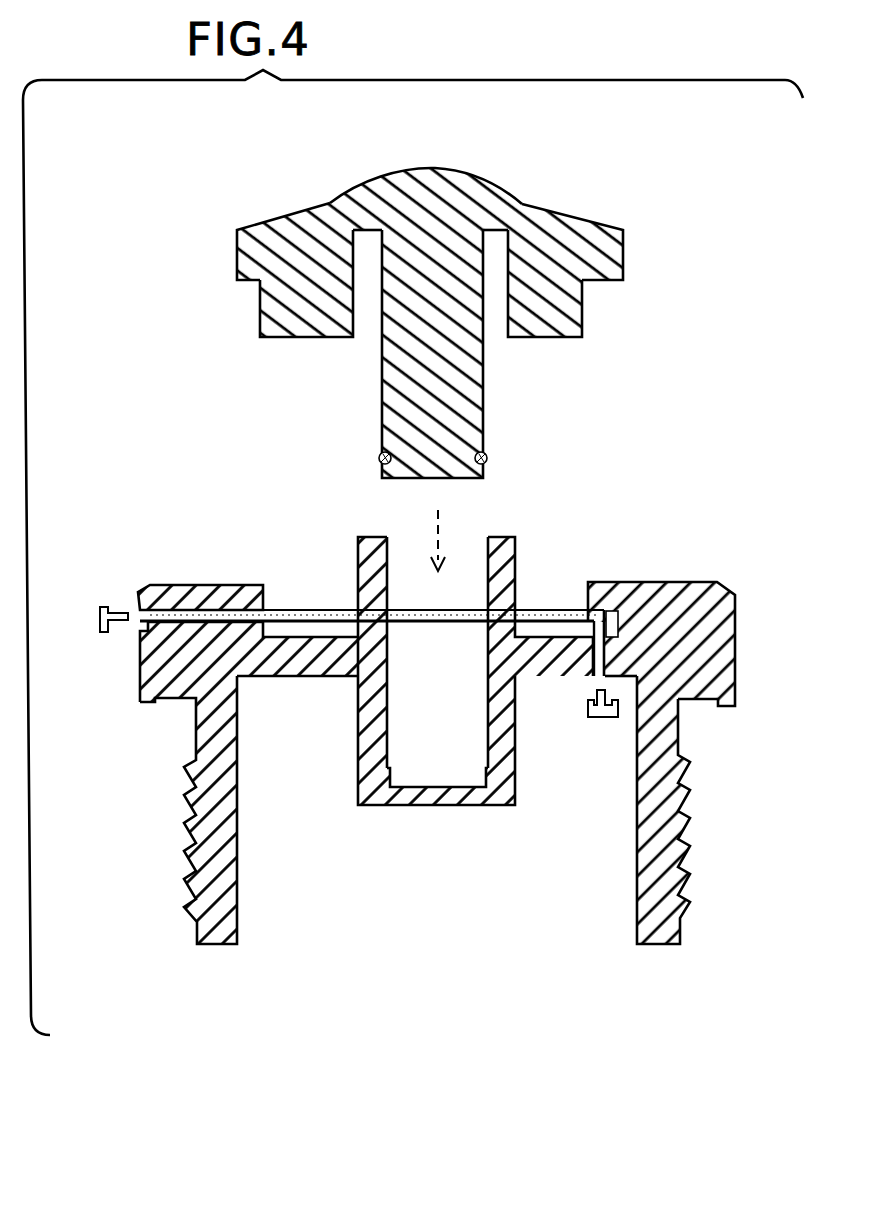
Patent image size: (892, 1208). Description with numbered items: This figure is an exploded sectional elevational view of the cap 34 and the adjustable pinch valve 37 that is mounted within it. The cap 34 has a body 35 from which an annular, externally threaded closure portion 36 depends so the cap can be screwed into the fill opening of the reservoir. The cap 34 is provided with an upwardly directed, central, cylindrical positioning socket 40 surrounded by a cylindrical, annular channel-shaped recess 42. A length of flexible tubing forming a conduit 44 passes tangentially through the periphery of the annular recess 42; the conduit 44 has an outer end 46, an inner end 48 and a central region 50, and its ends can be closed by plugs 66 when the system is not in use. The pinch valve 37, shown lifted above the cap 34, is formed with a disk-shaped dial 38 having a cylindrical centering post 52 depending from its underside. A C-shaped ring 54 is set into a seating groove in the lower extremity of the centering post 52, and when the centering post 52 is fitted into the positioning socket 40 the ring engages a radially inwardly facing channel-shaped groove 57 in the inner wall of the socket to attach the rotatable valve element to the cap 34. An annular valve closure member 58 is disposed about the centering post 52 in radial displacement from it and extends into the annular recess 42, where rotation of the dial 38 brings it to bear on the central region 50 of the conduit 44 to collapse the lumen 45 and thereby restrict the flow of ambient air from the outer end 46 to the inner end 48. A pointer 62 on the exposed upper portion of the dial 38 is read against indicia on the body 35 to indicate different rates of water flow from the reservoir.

The cap 34 is at (762, 596).
The body 35 is at (736, 648).
The closure portion 36 is at (692, 830).
The pinch valve 37 is at (628, 138).
The dial 38 is at (590, 218).
The positioning socket 40 is at (516, 546).
The recess 42 is at (324, 631).
The conduit 44 is at (559, 600).
The lumen 45 is at (318, 607).
The outer end 46 is at (147, 608).
The inner end 48 is at (579, 680).
The central region 50 is at (431, 623).
The centering post 52 is at (484, 394).
The C-shaped ring 54 is at (489, 458).
The channel-shaped groove 57 is at (384, 767).
The annular valve closure member 58 is at (583, 314).
The pointer 62 is at (447, 170).
The plug 66 is at (100, 634).